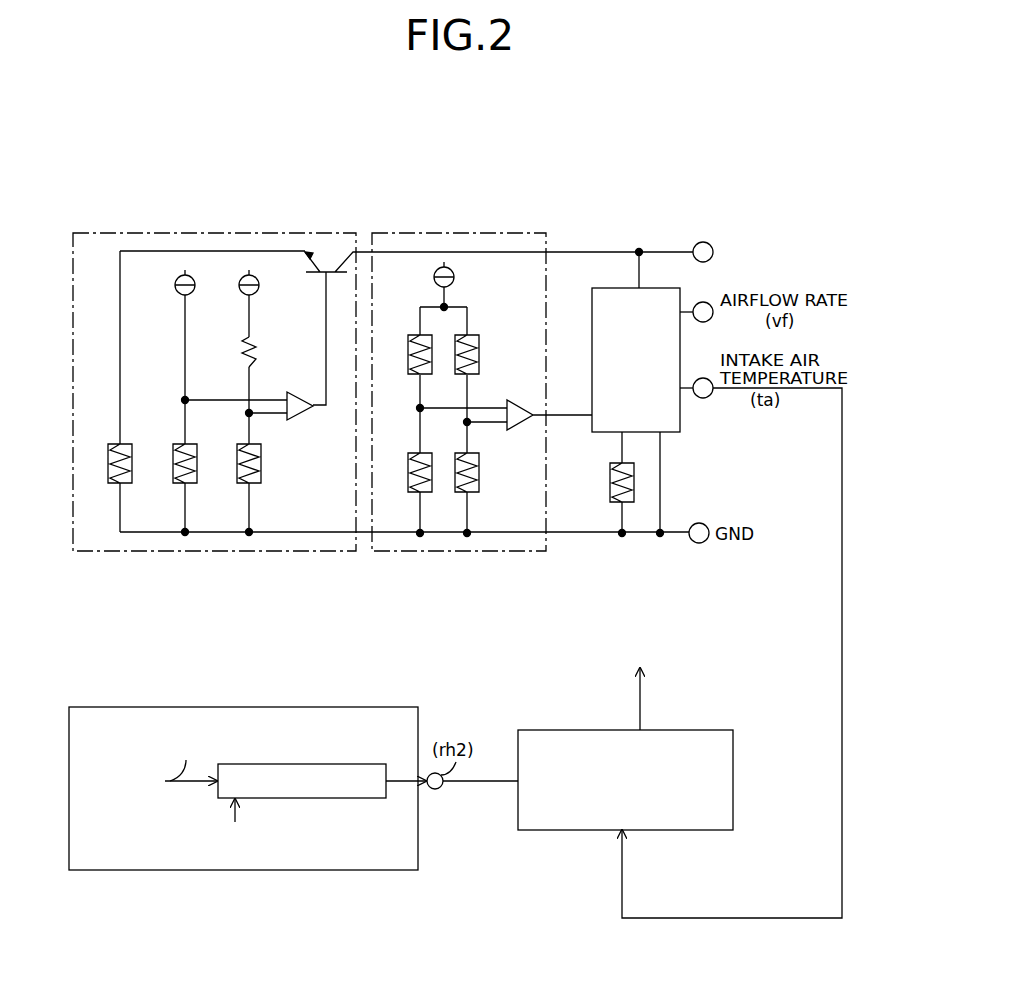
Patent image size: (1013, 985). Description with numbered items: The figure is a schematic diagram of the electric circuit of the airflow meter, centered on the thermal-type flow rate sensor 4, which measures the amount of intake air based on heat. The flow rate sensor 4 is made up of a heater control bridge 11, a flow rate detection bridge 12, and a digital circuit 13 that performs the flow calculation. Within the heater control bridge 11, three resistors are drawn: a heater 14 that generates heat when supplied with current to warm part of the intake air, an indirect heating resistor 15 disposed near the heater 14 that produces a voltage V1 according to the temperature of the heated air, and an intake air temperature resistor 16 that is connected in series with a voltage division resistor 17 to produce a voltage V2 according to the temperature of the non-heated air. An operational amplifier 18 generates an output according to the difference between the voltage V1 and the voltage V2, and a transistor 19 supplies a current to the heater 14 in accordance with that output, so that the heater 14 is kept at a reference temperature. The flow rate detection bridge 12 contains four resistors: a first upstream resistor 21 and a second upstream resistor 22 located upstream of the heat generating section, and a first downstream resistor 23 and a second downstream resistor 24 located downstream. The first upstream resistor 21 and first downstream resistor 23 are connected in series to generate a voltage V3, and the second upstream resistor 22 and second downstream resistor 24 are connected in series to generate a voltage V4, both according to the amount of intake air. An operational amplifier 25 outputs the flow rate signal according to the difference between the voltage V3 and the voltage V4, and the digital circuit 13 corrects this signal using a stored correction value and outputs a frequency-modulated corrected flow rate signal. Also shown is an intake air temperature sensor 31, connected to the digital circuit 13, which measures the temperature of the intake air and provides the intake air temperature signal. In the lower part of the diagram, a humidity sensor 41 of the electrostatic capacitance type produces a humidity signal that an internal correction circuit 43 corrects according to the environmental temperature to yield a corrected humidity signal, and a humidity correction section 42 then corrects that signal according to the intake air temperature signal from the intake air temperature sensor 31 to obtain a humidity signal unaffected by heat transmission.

The flow rate sensor 4 is at (665, 212).
The heater control bridge 11 is at (118, 232).
The flow rate detection bridge 12 is at (426, 232).
The digital circuit 13 is at (617, 288).
The heater 14 is at (108, 462).
The indirect heating resistor 15 is at (173, 462).
The intake air temperature resistor 16 is at (237, 462).
The voltage division resistor 17 is at (249, 345).
The operational amplifier 18 is at (297, 417).
The transistor 19 is at (323, 274).
The first upstream resistor 21 is at (408, 355).
The second upstream resistor 22 is at (480, 470).
The first downstream resistor 23 is at (408, 470).
The second downstream resistor 24 is at (480, 355).
The operational amplifier 25 is at (518, 400).
The intake air temperature sensor 31 is at (610, 485).
The humidity sensor 41 is at (243, 744).
The humidity correction section 42 is at (572, 730).
The internal correction circuit 43 is at (262, 764).
The voltage V1 is at (185, 400).
The voltage V2 is at (249, 413).
The voltage V3 is at (420, 408).
The voltage V4 is at (467, 424).